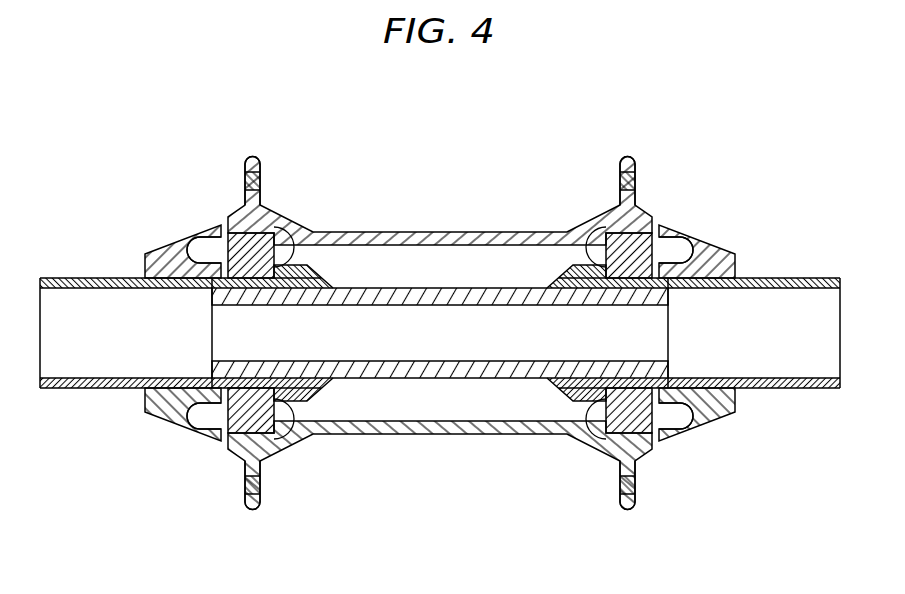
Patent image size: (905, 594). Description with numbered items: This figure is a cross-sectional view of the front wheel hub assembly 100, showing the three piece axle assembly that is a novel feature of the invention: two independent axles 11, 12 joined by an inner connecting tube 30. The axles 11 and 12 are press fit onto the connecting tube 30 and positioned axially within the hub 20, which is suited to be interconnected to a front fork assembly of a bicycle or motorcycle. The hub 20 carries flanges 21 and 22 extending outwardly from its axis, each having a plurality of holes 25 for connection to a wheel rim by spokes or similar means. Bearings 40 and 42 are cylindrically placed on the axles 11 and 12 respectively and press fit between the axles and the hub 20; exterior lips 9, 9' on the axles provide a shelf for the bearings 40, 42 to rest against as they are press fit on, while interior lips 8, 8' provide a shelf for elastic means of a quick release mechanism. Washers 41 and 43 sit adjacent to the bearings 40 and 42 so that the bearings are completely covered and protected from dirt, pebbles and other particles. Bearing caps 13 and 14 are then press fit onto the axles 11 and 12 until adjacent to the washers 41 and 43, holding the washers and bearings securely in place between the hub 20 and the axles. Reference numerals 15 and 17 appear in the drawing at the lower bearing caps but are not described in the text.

The wheel hub assembly 100 is at (572, 89).
The interior lip 8 is at (137, 329).
The interior lip 8' is at (741, 328).
The exterior lip 9 is at (307, 326).
The exterior lip 9' is at (555, 331).
The axle 11 is at (788, 277).
The axle 12 is at (60, 277).
The bearing cap 13 is at (678, 226).
The bearing cap 14 is at (156, 251).
The right bearing cone 15 is at (735, 398).
The left bearing cone 17 is at (143, 402).
The hub 20 is at (425, 231).
The flange 21 is at (630, 156).
The flange 22 is at (249, 156).
The holes 25 is at (261, 182).
The connecting tube 30 is at (400, 379).
The bearing 40 is at (603, 270).
The washer 41 is at (680, 254).
The bearing 42 is at (260, 238).
The washer 43 is at (218, 248).